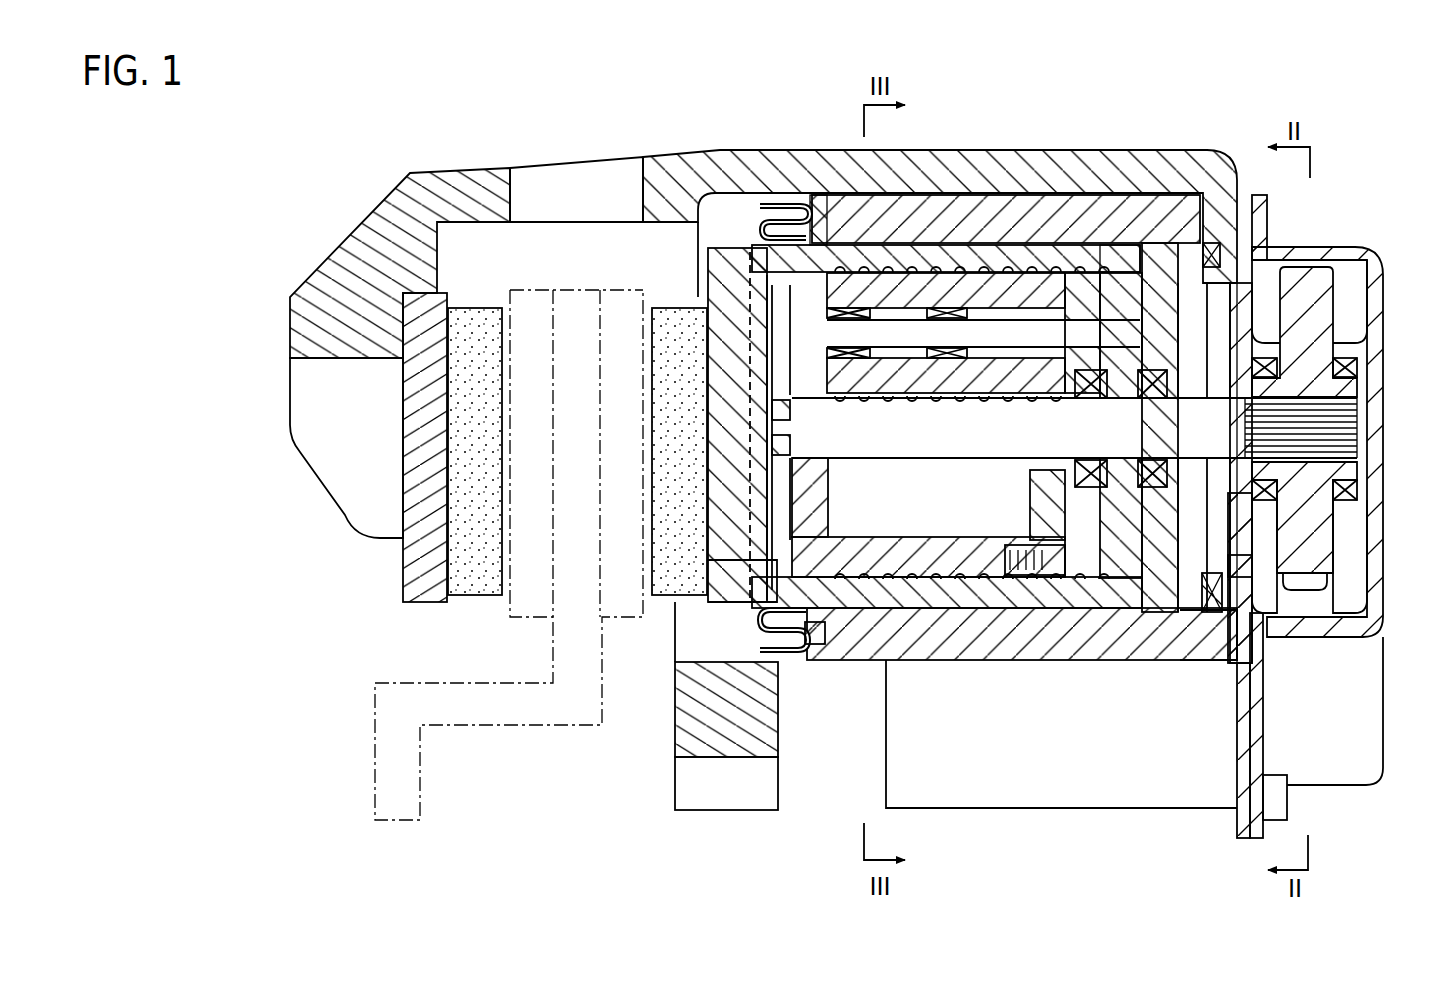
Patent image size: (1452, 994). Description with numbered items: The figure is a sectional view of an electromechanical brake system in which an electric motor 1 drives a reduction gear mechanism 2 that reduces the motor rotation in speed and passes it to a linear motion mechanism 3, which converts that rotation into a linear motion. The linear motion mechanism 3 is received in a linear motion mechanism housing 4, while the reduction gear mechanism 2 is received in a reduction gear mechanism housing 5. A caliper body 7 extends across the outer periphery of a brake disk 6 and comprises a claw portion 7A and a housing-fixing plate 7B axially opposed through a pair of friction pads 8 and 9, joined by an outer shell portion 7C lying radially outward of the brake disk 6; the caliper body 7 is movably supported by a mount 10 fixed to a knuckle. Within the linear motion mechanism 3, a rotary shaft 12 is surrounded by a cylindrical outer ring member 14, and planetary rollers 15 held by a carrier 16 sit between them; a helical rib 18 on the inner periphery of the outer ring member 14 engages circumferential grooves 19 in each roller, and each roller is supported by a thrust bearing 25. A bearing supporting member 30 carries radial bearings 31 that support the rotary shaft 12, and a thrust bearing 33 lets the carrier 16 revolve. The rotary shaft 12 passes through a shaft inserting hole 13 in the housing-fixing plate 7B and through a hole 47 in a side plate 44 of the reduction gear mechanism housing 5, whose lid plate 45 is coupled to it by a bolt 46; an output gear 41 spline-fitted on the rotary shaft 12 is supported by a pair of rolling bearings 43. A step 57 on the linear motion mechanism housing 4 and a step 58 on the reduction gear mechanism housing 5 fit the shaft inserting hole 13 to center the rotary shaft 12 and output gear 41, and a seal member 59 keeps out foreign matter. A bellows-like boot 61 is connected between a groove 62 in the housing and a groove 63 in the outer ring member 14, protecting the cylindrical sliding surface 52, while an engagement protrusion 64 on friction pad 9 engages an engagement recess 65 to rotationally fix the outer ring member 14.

The electric motor 1 is at (1028, 808).
The reduction gear mechanism 2 is at (1345, 268).
The linear motion mechanism 3 is at (971, 424).
The linear motion mechanism housing 4 is at (1085, 645).
The reduction gear mechanism housing 5 is at (1320, 245).
The brake disk 6 is at (578, 297).
The caliper body 7 is at (722, 405).
The claw portion 7A is at (307, 395).
The housing-fixing plate 7B is at (1215, 662).
The outer shell portion 7C is at (818, 150).
The friction pad 8 is at (475, 590).
The friction pad 9 is at (665, 600).
The mount 10 is at (724, 795).
The rotary shaft 12 is at (1350, 432).
The shaft inserting hole 13 is at (1250, 533).
The outer ring member 14 is at (1012, 600).
The planetary rollers 15 is at (910, 270).
The carrier 16 is at (1057, 243).
The helical rib 18 is at (935, 577).
The circumferential grooves 19 is at (945, 400).
The thrust bearing 25 is at (992, 398).
The bearing supporting member 30 is at (1158, 255).
The radial bearings 31 is at (1150, 400).
The thrust bearing 33 is at (1123, 270).
The output gear 41 is at (1325, 302).
The rolling bearings 43 is at (1345, 362).
The side plate 44 is at (1237, 822).
The lid plate 45 is at (1256, 838).
The bolt 46 is at (1282, 800).
The hole 47 is at (1243, 495).
The cylindrical sliding surface 52 is at (977, 600).
The step 57 is at (1200, 605).
The step 58 is at (1230, 568).
The seal member 59 is at (1211, 243).
The boot 61 is at (757, 200).
The groove 62 is at (838, 640).
The groove 63 is at (812, 645).
The engagement protrusion 64 is at (782, 415).
The engagement recess 65 is at (782, 440).